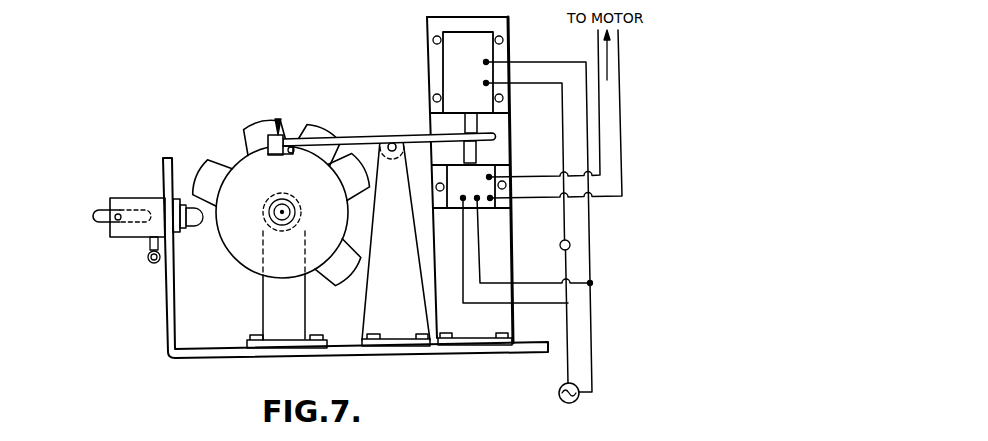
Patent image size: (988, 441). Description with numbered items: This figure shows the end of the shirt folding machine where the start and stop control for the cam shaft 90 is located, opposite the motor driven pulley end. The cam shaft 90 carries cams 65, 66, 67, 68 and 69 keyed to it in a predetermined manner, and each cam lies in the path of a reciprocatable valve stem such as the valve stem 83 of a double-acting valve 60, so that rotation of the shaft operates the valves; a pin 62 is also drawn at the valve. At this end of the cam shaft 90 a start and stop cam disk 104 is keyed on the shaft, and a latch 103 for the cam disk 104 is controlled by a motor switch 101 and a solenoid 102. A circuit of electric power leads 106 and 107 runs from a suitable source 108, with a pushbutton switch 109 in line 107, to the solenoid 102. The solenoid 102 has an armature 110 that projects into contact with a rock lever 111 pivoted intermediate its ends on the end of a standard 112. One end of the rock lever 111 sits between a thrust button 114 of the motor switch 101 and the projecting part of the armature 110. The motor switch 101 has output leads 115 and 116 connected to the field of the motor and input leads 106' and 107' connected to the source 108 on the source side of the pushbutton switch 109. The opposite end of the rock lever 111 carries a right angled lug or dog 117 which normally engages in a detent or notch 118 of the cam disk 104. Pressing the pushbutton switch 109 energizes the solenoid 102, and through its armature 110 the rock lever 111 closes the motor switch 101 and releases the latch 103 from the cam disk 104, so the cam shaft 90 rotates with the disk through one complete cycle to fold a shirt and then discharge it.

The double-acting valve 60 is at (150, 198).
The pin 62 is at (100, 222).
The cam 65 is at (207, 166).
The cam 66 is at (262, 121).
The cam 67 is at (320, 130).
The cam 68 is at (357, 190).
The cam 69 is at (333, 281).
The valve stem 83 is at (148, 258).
The cam shaft 90 is at (272, 215).
The motor switch 101 is at (473, 190).
The solenoid 102 is at (478, 81).
The latch 103 is at (277, 120).
The start and stop cam disk 104 is at (247, 172).
The electric power lead 106 is at (566, 227).
The input lead 106' is at (533, 240).
The electric power lead 107 is at (558, 233).
The input lead 107' is at (504, 264).
The source 108 is at (578, 403).
The pushbutton switch 109 is at (562, 249).
The armature 110 is at (463, 122).
The rock lever 111 is at (355, 137).
The standard 112 is at (402, 247).
The thrust button 114 is at (472, 152).
The output lead 115 is at (600, 133).
The output lead 116 is at (622, 172).
The dog 117 is at (281, 138).
The notch 118 is at (293, 153).